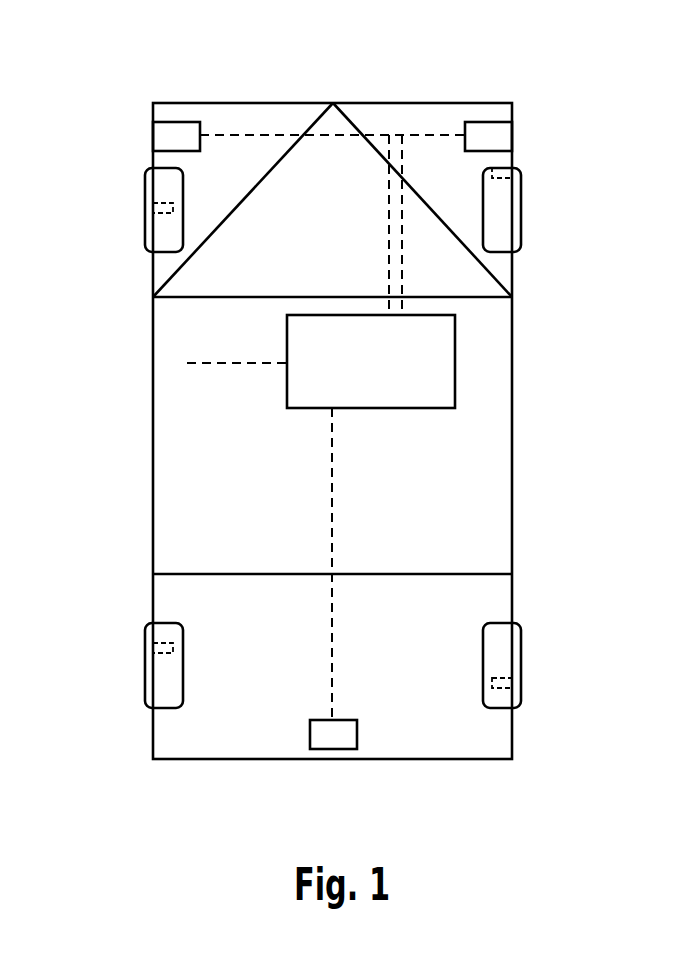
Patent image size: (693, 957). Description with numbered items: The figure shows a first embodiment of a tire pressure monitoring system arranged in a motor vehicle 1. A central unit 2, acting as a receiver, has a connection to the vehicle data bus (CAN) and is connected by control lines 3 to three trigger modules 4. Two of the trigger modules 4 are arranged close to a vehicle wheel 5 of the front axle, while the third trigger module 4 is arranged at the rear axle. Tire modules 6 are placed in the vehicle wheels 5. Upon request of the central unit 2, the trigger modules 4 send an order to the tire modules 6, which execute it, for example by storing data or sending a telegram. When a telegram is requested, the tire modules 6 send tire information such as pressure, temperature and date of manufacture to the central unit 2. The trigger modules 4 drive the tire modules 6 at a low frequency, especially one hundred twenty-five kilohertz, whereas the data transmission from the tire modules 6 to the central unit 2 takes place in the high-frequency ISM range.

The motor vehicle 1 is at (547, 143).
The central unit 2 is at (443, 363).
The control lines 3 is at (275, 134).
The trigger module 4 is at (177, 135).
The vehicle wheel 5 is at (157, 233).
The tire module 6 is at (163, 203).